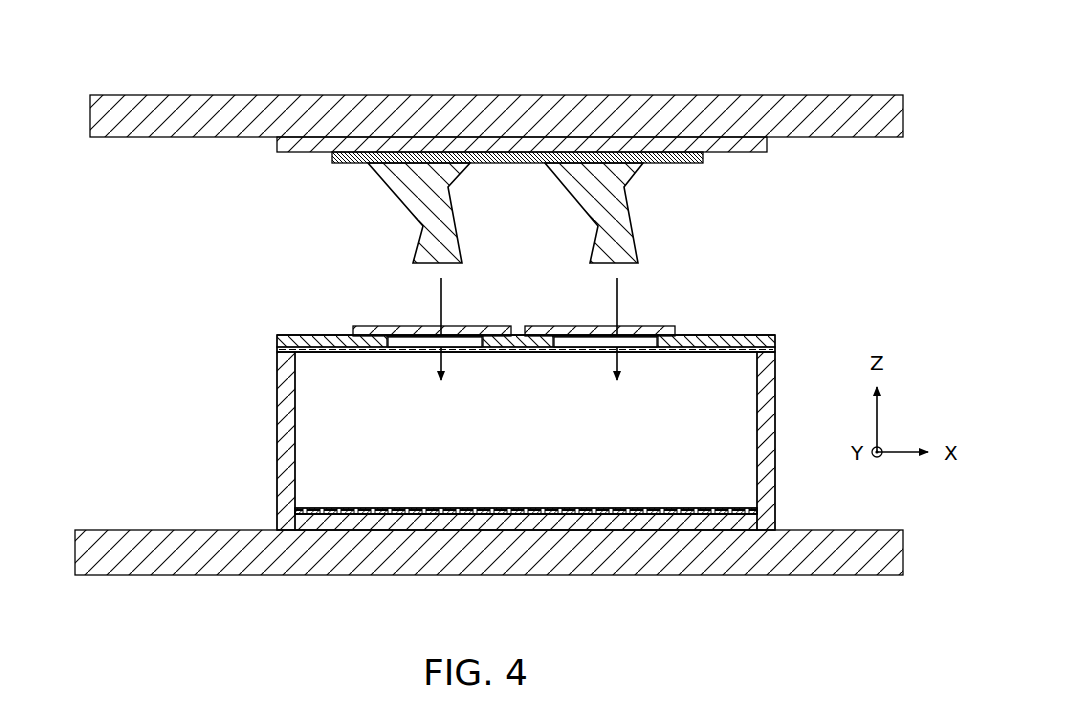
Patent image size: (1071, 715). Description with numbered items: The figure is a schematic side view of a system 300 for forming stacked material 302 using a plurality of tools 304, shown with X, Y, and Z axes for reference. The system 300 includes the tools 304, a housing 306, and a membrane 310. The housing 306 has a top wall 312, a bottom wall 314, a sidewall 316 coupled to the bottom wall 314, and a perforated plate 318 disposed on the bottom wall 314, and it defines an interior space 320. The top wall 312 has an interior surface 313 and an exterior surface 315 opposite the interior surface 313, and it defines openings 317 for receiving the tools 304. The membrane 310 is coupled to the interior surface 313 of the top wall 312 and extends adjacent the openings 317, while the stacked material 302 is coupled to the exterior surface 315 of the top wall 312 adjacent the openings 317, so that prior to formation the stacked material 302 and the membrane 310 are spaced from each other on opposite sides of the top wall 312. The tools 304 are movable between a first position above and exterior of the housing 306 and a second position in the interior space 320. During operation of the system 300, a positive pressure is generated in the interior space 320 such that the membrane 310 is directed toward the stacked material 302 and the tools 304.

The system 300 is at (122, 50).
The stacked material 302 is at (488, 325).
The tools 304 is at (440, 212).
The housing 306 is at (481, 471).
The membrane 310 is at (308, 352).
The top wall 312 is at (315, 338).
The interior surface 313 is at (717, 352).
The bottom wall 314 is at (332, 522).
The exterior surface 315 is at (742, 334).
The sidewall 316 is at (278, 485).
The openings 317 is at (390, 342).
The perforated plate 318 is at (658, 522).
The interior space 320 is at (728, 472).